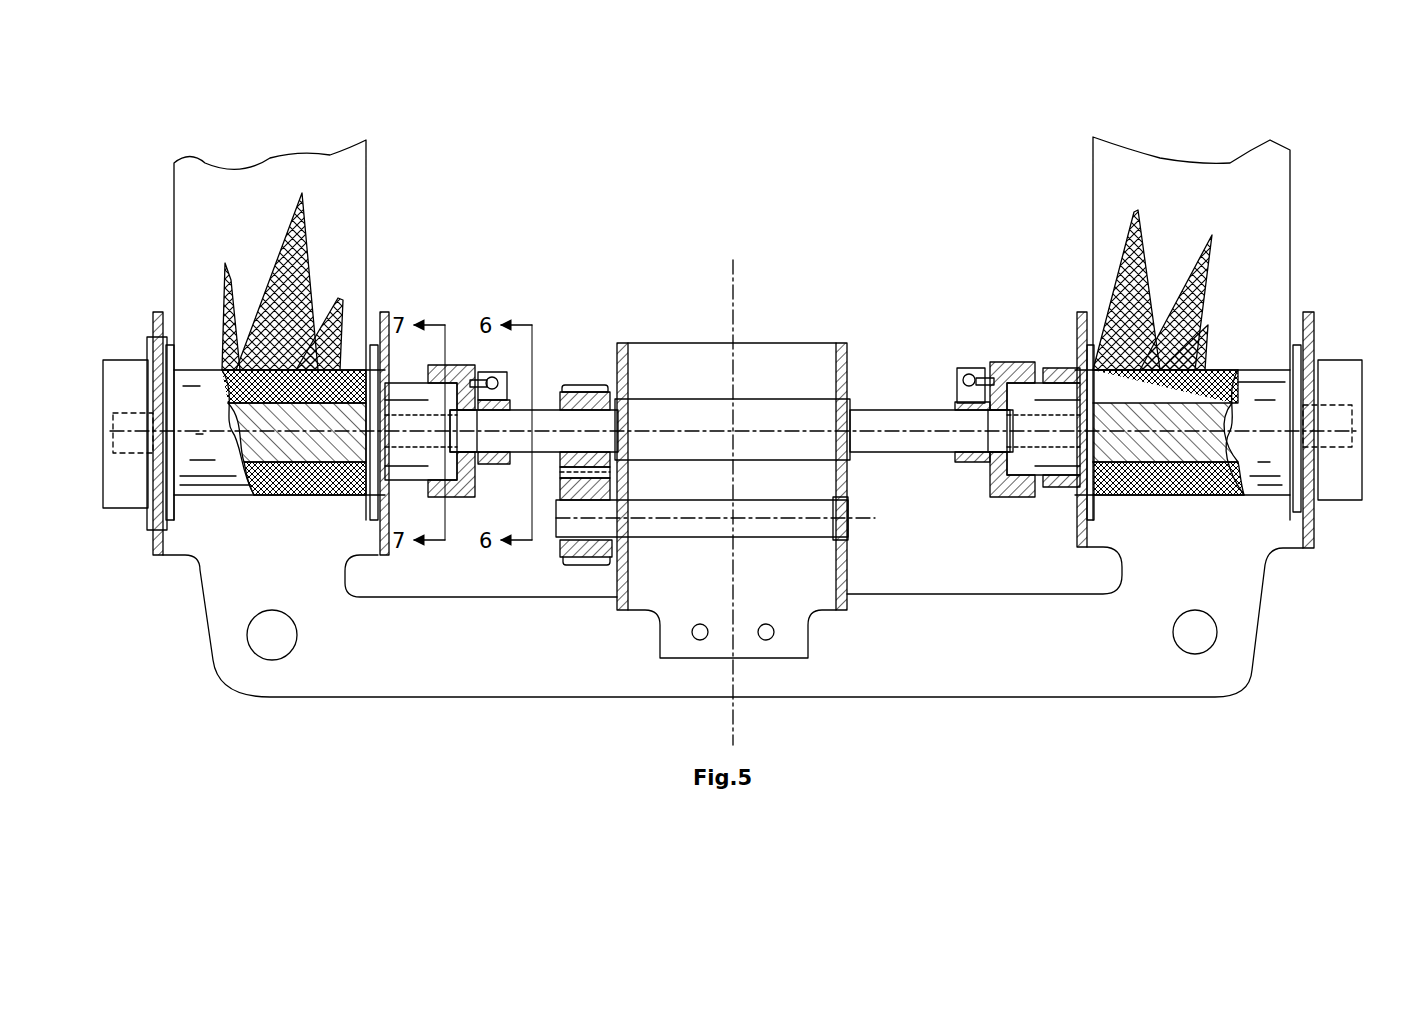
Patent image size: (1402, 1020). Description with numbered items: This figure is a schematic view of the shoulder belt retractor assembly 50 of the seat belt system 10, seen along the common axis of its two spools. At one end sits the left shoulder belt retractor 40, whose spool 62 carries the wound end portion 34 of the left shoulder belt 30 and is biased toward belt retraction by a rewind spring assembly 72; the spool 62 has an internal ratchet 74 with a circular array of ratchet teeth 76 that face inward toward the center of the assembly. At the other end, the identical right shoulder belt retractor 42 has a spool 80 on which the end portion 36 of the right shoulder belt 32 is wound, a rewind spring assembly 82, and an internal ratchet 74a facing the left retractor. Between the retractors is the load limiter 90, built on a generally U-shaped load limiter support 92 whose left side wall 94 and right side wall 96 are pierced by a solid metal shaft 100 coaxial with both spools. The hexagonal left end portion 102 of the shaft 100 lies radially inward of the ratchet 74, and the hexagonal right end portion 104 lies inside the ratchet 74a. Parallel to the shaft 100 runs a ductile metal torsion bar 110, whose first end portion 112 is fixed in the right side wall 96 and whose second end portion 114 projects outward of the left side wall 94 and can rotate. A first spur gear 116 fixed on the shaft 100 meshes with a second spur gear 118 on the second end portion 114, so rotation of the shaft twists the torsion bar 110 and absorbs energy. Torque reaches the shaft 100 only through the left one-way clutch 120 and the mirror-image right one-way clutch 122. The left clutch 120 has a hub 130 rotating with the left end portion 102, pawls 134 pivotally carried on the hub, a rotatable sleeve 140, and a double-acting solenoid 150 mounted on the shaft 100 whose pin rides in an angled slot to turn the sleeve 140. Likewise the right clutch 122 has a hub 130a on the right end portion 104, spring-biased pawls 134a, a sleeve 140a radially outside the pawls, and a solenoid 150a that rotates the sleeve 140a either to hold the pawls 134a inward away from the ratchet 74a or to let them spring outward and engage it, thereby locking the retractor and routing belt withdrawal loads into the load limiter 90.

The seat belt system 10 is at (625, 777).
The left shoulder belt 30 is at (279, 309).
The right shoulder belt 32 is at (1182, 303).
The end portion of the left shoulder belt 34 is at (290, 160).
The end portion of the right shoulder belt 36 is at (1230, 165).
The left shoulder belt retractor 40 is at (284, 540).
The right shoulder belt retractor 42 is at (1260, 308).
The shoulder belt retractor assembly 50 is at (607, 708).
The spool 62 is at (176, 508).
The rewind spring assembly 72 is at (124, 360).
The internal ratchet 74 is at (385, 332).
The internal ratchet 74a is at (1060, 342).
The ratchet teeth 76 is at (380, 530).
The spool 80 is at (1292, 510).
The rewind spring assembly 82 is at (1345, 502).
The load limiter 90 is at (744, 423).
The load limiter support 92 is at (762, 341).
The left side wall 94 is at (617, 345).
The right side wall 96 is at (840, 345).
The shaft 100 is at (688, 398).
The left end portion 102 is at (512, 435).
The right end portion 104 is at (928, 435).
The torsion bar 110 is at (778, 545).
The first end portion 112 is at (848, 538).
The second end portion 114 is at (556, 540).
The first spur gear 116 is at (590, 385).
The second spur gear 118 is at (585, 568).
The left one-way clutch 120 is at (483, 374).
The right one-way clutch 122 is at (999, 378).
The hub 130 is at (440, 398).
The hub 130a is at (1070, 450).
The pawl 134 is at (448, 492).
The pawl 134a is at (1053, 452).
The sleeve 140 is at (463, 362).
The sleeve 140a is at (1000, 360).
The solenoid 150 is at (497, 366).
The solenoid 150a is at (970, 368).